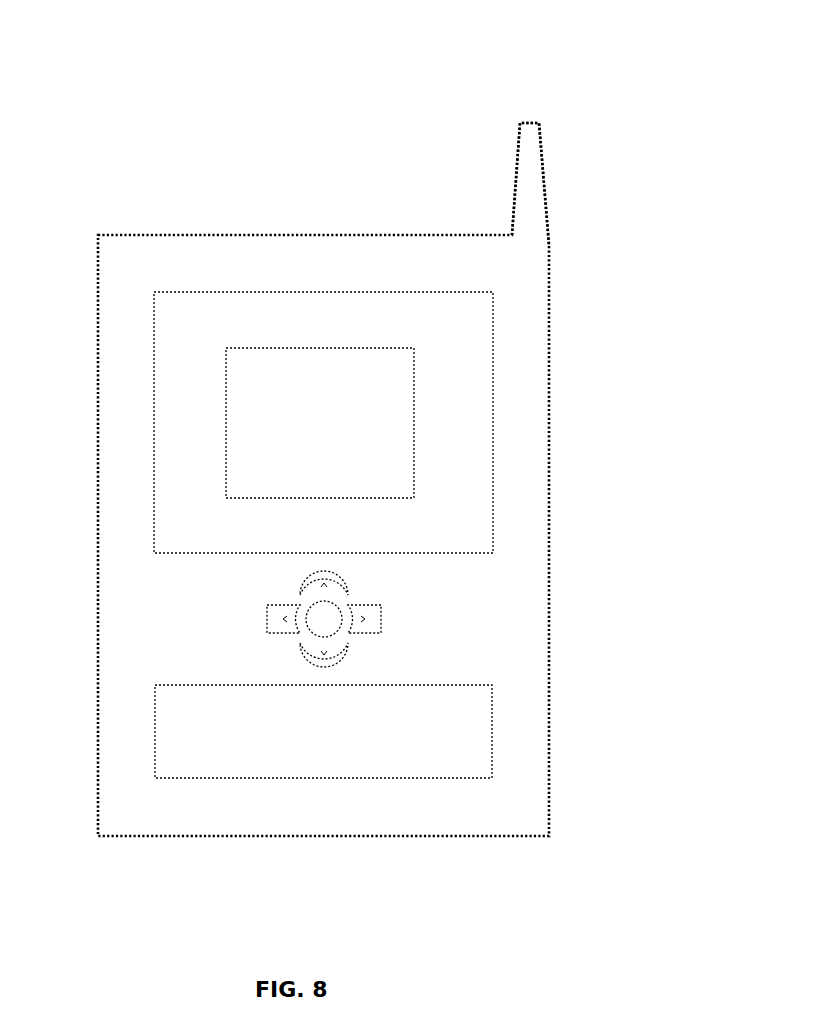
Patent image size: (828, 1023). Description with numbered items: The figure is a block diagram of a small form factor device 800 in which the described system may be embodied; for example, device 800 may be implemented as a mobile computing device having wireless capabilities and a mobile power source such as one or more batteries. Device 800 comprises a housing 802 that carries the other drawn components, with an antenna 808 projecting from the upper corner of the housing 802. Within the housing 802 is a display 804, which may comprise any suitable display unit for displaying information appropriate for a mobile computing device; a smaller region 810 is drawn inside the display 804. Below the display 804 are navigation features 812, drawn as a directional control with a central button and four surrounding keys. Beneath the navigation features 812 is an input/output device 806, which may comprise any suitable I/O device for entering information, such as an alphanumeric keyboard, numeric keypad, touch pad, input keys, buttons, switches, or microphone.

The small form factor device 800 is at (173, 141).
The housing 802 is at (549, 490).
The display 804 is at (493, 310).
The input/output (I/O) device 806 is at (492, 723).
The antenna 808 is at (518, 148).
The display region 810 is at (414, 405).
The navigation features 812 is at (393, 646).